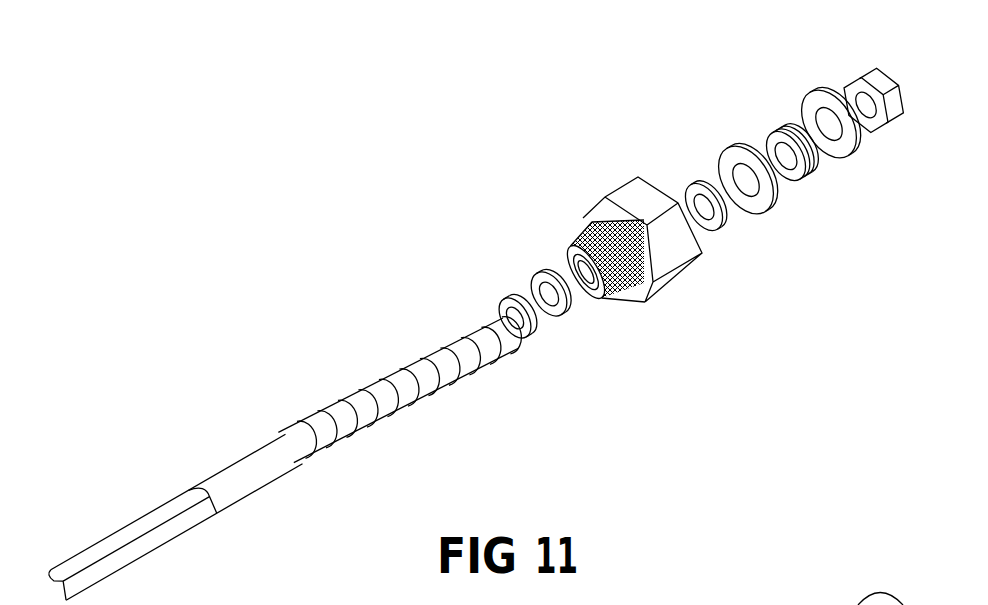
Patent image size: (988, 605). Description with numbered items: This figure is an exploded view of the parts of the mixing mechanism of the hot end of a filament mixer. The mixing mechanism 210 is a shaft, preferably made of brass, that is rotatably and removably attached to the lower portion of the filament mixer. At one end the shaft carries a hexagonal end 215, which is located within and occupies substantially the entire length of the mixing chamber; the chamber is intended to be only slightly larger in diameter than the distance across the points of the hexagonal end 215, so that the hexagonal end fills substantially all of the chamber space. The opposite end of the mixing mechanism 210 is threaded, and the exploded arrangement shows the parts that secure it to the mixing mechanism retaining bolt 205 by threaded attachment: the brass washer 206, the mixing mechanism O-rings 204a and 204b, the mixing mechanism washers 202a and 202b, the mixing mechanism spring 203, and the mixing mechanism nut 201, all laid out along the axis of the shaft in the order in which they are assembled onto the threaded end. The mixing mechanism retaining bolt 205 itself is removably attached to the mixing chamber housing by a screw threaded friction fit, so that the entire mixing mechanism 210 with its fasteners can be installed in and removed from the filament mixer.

The mixing mechanism nut 201 is at (882, 76).
The mixing mechanism washer 202a is at (827, 94).
The mixing mechanism washer 202b is at (773, 200).
The mixing mechanism spring 203 is at (787, 130).
The mixing mechanism O-ring 204a is at (713, 222).
The mixing mechanism O-ring 204b is at (545, 270).
The mixing mechanism retaining bolt 205 is at (632, 193).
The brass washer 206 is at (533, 322).
The mixing mechanism 210 is at (381, 380).
The hexagonal end 215 is at (150, 553).